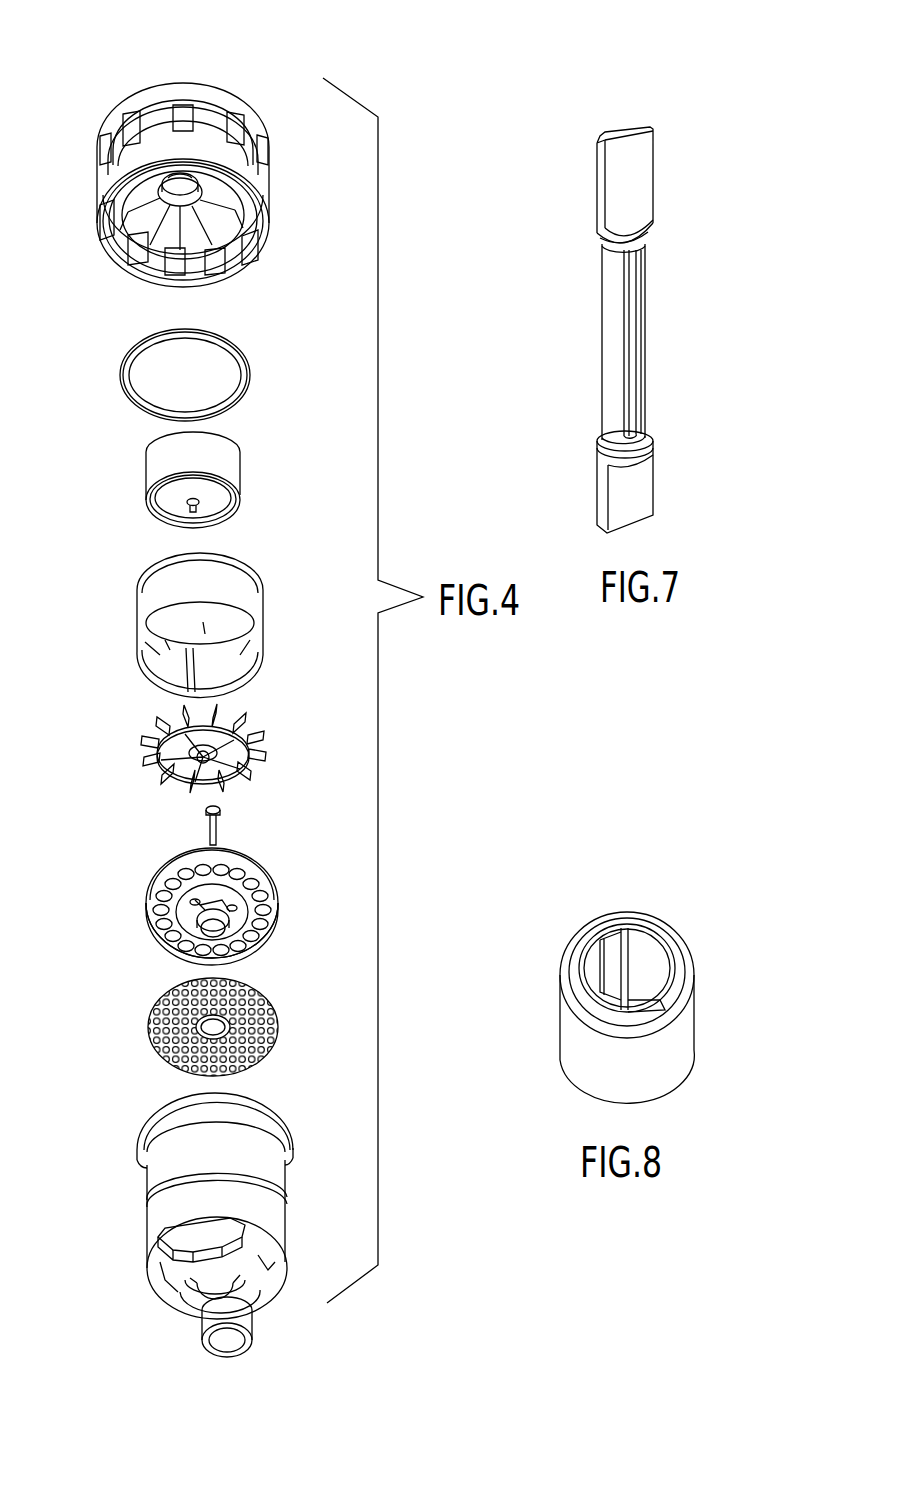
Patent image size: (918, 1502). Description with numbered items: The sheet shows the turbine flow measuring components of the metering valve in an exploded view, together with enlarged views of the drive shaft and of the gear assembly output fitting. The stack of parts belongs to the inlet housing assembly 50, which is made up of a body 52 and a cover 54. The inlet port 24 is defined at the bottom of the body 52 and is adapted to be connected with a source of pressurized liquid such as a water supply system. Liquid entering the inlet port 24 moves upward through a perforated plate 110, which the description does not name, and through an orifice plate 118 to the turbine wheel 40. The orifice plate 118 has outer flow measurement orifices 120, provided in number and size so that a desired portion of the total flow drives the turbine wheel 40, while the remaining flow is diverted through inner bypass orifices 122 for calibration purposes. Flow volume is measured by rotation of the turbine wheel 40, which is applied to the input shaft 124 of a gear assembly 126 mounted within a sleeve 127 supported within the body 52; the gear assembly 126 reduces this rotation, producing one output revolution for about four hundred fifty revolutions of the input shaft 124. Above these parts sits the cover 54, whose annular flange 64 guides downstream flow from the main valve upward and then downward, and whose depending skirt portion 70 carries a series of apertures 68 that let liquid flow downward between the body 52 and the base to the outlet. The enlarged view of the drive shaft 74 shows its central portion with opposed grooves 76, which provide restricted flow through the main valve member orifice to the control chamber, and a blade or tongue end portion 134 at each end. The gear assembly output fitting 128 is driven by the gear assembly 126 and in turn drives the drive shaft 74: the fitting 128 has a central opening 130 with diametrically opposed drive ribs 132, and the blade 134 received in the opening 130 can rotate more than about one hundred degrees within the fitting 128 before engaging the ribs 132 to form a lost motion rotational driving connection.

In FIG. 4, the inlet housing assembly 50 is at (76, 100).
In FIG. 4, the cover 54 is at (100, 233).
In FIG. 4, the annular flange 64 is at (237, 110).
In FIG. 4, the apertures 68 is at (213, 120).
In FIG. 4, the depending skirt portion 70 is at (240, 265).
In FIG. 4, the gear assembly 126 is at (147, 466).
In FIG. 4, the input shaft 124 is at (172, 508).
In FIG. 4, the sleeve 127 is at (152, 596).
In FIG. 4, the turbine wheel 40 is at (150, 770).
In FIG. 4, the orifice plate 118 is at (156, 880).
In FIG. 4, the outer flow measurement orifices 120 is at (162, 938).
In FIG. 4, the inner bypass orifices 122 is at (225, 903).
In FIG. 4, the screen 110 is at (152, 1022).
In FIG. 4, the body 52 is at (150, 1180).
In FIG. 4, the inlet port 24 is at (240, 1335).
In FIG. 7, the blade or tongue end portion 134 is at (640, 170).
In FIG. 7, the drive shaft 74 is at (605, 322).
In FIG. 7, the opposed grooves 76 is at (635, 322).
In FIG. 8, the gear assembly output fitting 128 is at (690, 1040).
In FIG. 8, the central opening 130 is at (662, 970).
In FIG. 8, the drive ribs 132 is at (600, 978).